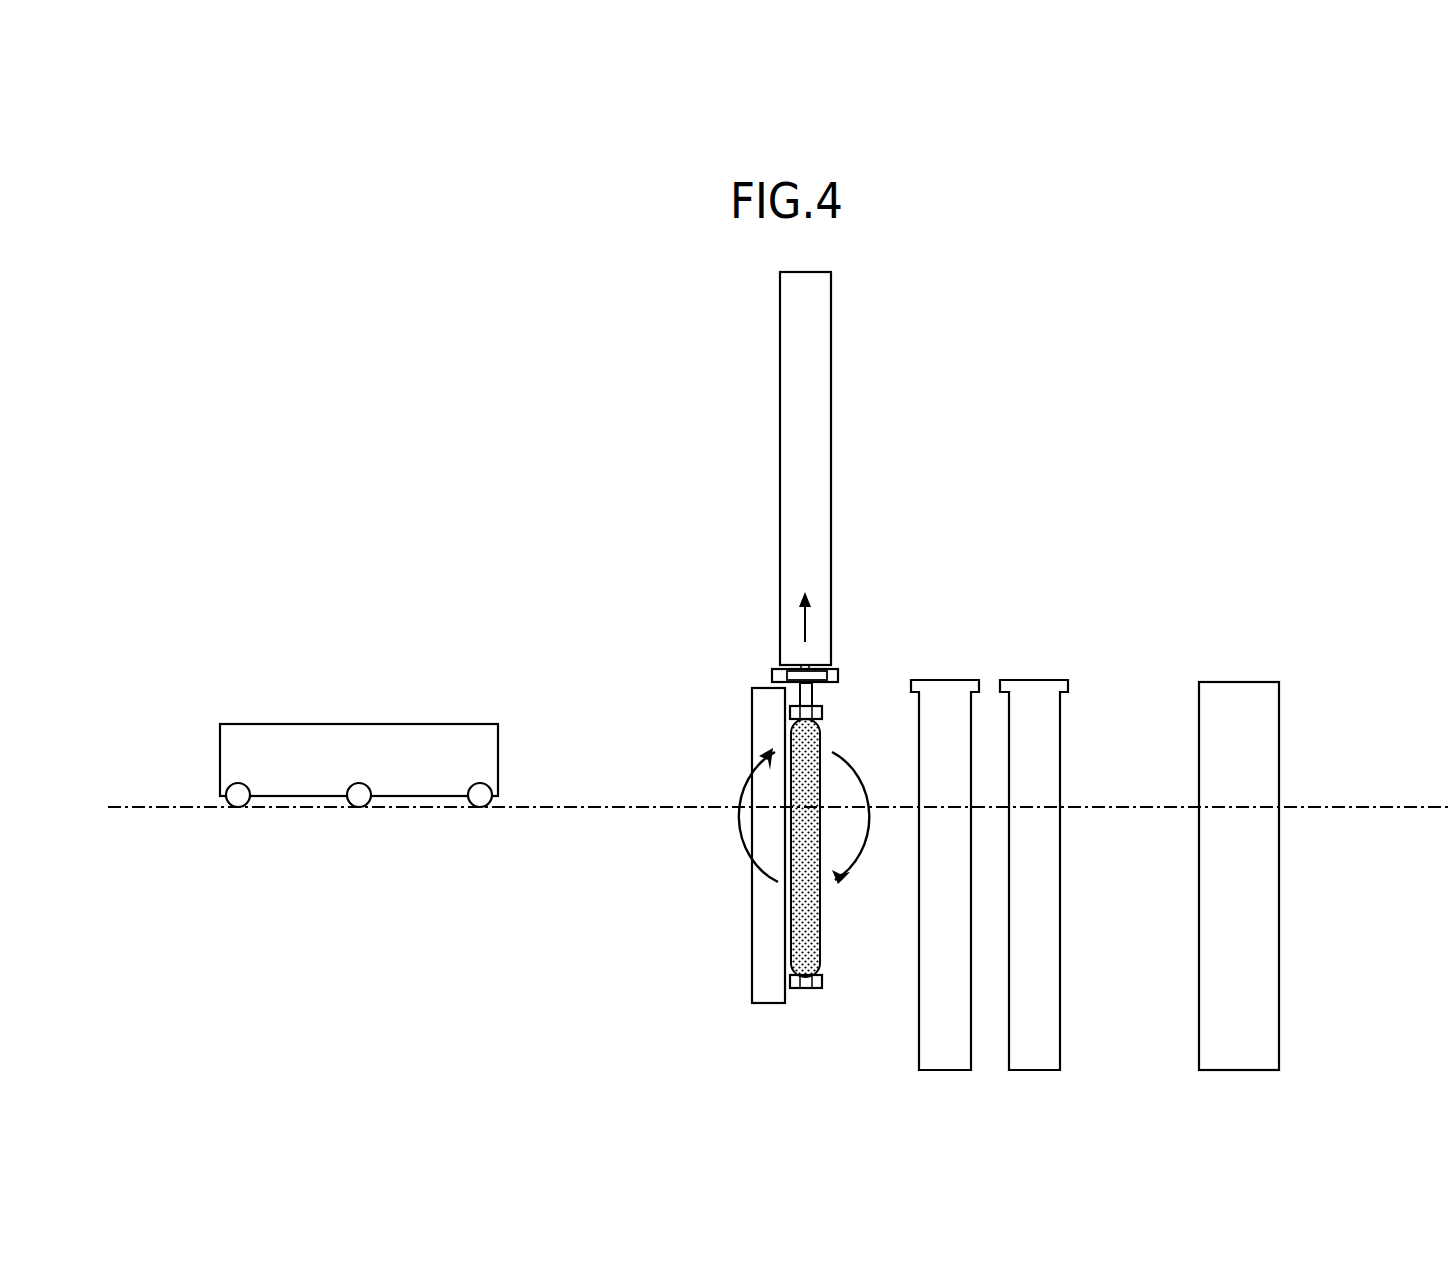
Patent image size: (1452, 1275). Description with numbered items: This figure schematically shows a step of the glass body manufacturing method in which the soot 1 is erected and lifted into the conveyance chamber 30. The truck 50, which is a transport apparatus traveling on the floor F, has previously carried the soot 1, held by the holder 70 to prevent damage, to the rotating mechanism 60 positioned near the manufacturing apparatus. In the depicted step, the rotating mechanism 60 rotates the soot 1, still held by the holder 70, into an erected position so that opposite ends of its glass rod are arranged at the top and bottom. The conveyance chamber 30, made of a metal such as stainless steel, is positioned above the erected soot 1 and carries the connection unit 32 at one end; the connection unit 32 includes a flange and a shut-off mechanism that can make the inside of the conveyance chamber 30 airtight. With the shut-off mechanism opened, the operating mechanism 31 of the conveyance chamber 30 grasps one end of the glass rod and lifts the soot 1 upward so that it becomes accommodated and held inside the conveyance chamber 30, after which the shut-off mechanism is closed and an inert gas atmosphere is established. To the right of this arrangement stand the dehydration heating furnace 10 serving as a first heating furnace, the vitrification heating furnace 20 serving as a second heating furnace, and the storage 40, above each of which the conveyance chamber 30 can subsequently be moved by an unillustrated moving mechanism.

The soot 1 is at (820, 924).
The dehydration heating furnace 10 is at (919, 1025).
The vitrification heating furnace 20 is at (1060, 1024).
The conveyance chamber 30 is at (833, 466).
The operating mechanism 31 is at (812, 693).
The connection unit 32 is at (838, 679).
The storage 40 is at (1279, 698).
The truck 50 is at (358, 724).
The rotating mechanism 60 is at (770, 1003).
The holder 70 is at (822, 712).
The floor F is at (1431, 807).